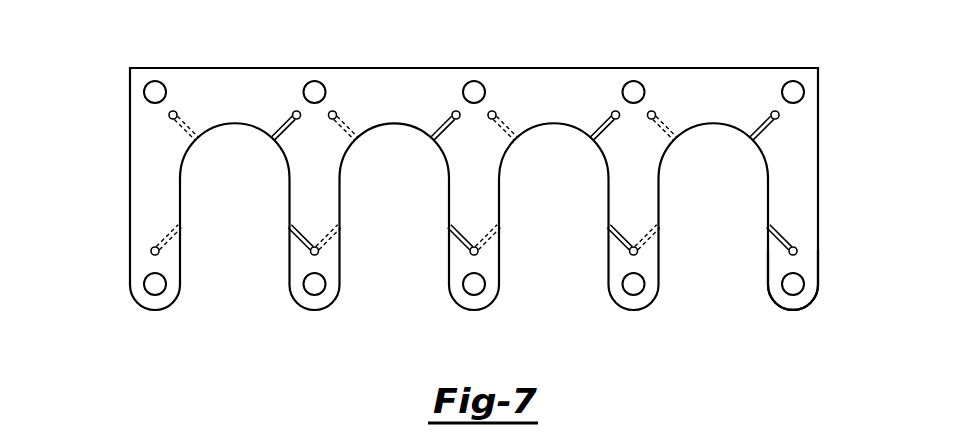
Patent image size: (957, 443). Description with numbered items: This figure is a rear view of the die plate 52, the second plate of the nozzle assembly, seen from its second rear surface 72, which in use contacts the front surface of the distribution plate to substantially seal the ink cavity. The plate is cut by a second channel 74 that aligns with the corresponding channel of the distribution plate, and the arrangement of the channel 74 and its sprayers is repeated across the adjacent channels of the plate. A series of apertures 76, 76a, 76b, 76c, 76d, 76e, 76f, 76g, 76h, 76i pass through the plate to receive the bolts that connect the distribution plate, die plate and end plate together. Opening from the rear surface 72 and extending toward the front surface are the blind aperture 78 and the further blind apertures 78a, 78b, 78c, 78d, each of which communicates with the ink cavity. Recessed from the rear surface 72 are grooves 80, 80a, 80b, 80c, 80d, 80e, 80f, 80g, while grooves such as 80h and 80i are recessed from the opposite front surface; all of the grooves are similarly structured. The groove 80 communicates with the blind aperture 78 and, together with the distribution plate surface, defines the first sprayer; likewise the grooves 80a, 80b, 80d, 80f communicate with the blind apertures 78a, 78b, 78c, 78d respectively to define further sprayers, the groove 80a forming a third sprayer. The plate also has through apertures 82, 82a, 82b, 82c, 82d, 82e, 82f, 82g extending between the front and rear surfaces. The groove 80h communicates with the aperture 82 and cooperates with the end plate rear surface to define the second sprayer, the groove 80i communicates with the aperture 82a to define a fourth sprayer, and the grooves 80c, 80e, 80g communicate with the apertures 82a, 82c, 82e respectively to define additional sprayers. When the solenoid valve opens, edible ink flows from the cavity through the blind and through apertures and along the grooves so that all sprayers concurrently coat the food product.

The die plate 52 is at (66, 110).
The second rear surface 72 is at (150, 178).
The second channel 74 is at (767, 263).
The aperture 76 is at (143, 96).
The aperture 76a is at (302, 96).
The aperture 76b is at (463, 97).
The aperture 76c is at (623, 97).
The aperture 76d is at (783, 96).
The aperture 76e is at (783, 278).
The aperture 76f is at (623, 281).
The aperture 76g is at (465, 283).
The aperture 76h is at (303, 283).
The aperture 76i is at (145, 281).
The blind aperture 78 is at (779, 114).
The blind aperture 78a is at (798, 251).
The blind aperture 78b is at (611, 116).
The blind aperture 78c is at (458, 120).
The blind aperture 78d is at (292, 112).
The groove 80 is at (768, 132).
The groove 80a is at (783, 234).
The groove 80b is at (606, 160).
The groove 80c is at (612, 249).
The groove 80d is at (445, 115).
The groove 80e is at (449, 247).
The groove 80f is at (289, 160).
The groove 80g is at (289, 250).
The groove 80h is at (672, 125).
The groove 80i is at (652, 243).
The aperture 82 is at (653, 111).
The aperture 82a is at (627, 260).
The aperture 82b is at (496, 114).
The aperture 82c is at (465, 260).
The aperture 82d is at (334, 124).
The aperture 82e is at (306, 263).
The aperture 82f is at (178, 113).
The aperture 82g is at (151, 252).